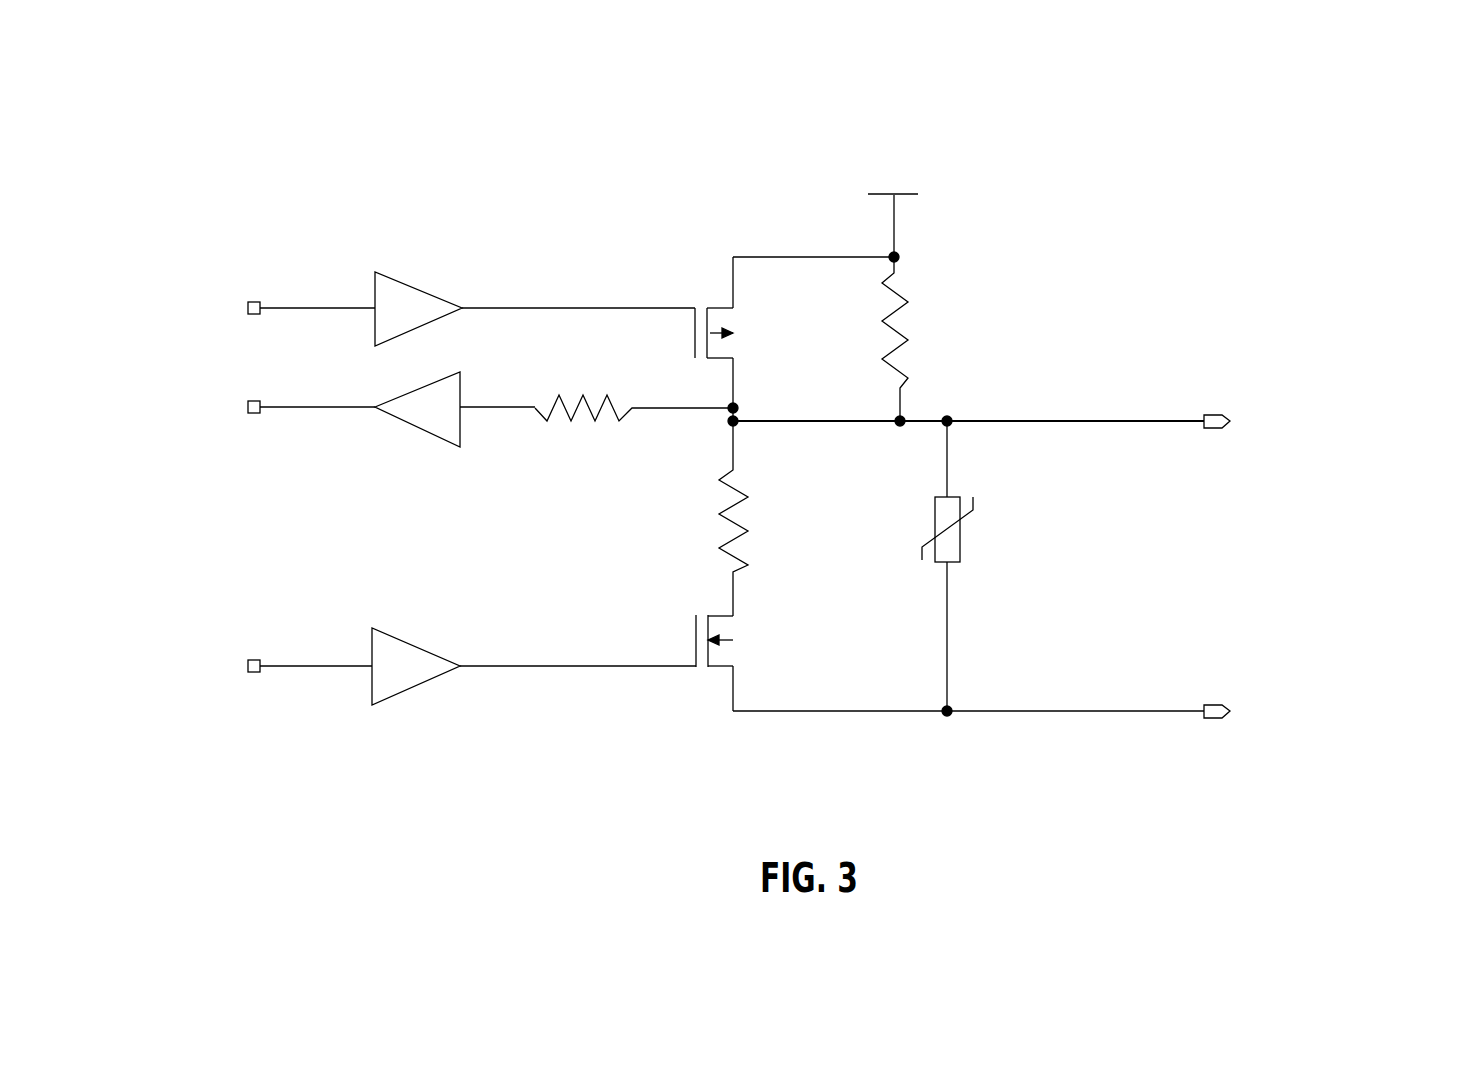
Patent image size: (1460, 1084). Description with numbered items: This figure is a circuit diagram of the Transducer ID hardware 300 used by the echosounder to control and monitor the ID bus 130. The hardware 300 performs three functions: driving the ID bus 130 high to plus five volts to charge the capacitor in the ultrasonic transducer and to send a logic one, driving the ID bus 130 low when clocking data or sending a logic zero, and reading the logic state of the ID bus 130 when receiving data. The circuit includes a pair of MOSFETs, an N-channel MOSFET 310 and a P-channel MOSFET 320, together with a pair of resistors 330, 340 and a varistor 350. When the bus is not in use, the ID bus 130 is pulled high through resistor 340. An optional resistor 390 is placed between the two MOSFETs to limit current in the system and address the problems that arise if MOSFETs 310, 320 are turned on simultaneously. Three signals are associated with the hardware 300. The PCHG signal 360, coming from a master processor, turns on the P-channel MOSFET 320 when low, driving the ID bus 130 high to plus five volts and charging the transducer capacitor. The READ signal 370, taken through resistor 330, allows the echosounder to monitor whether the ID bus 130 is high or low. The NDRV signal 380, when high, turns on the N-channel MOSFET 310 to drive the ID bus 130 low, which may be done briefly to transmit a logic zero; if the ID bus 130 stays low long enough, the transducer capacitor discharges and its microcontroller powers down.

The Transducer ID hardware 300 is at (1050, 203).
The N-channel MOSFET Q1 310 is at (647, 677).
The P-channel MOSFET Q2 320 is at (645, 240).
The resistor 330 is at (572, 435).
The resistor 340 is at (930, 357).
The varistor 350 is at (920, 523).
The PCHG signal 360 is at (172, 282).
The READ signal 370 is at (172, 397).
The NDRV signal 380 is at (173, 641).
The optional resistor 390 is at (710, 525).
The ID bus 130 is at (1353, 421).